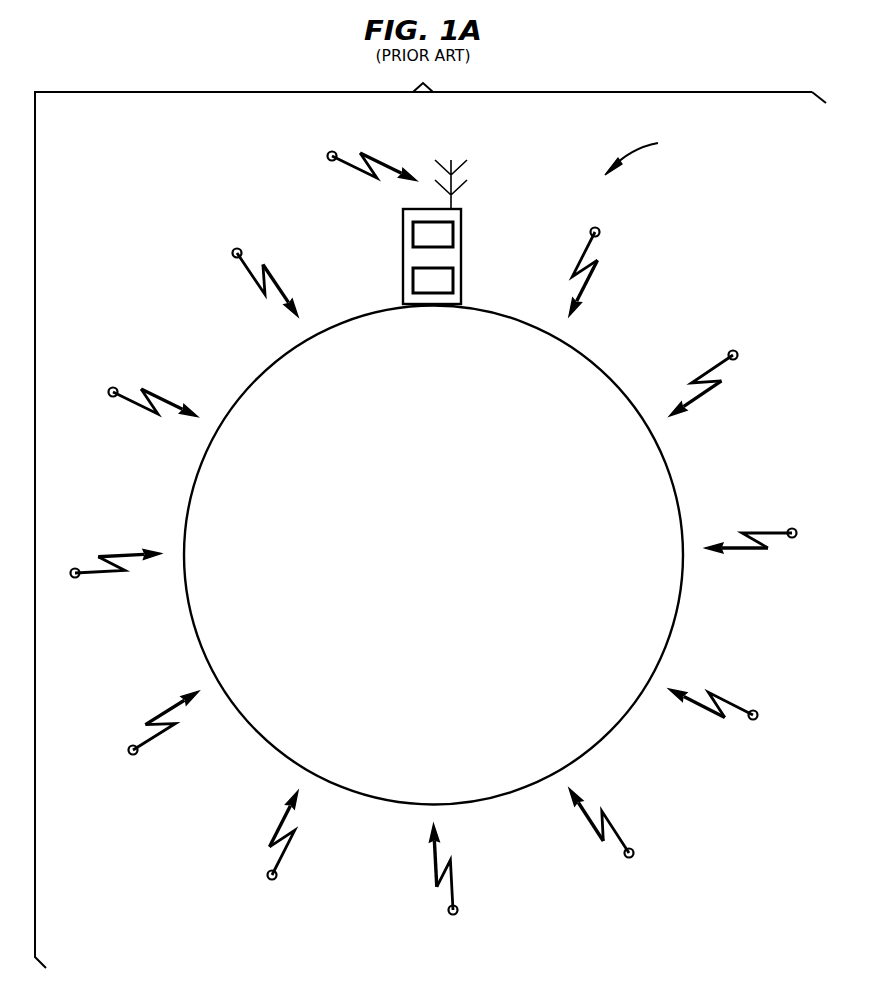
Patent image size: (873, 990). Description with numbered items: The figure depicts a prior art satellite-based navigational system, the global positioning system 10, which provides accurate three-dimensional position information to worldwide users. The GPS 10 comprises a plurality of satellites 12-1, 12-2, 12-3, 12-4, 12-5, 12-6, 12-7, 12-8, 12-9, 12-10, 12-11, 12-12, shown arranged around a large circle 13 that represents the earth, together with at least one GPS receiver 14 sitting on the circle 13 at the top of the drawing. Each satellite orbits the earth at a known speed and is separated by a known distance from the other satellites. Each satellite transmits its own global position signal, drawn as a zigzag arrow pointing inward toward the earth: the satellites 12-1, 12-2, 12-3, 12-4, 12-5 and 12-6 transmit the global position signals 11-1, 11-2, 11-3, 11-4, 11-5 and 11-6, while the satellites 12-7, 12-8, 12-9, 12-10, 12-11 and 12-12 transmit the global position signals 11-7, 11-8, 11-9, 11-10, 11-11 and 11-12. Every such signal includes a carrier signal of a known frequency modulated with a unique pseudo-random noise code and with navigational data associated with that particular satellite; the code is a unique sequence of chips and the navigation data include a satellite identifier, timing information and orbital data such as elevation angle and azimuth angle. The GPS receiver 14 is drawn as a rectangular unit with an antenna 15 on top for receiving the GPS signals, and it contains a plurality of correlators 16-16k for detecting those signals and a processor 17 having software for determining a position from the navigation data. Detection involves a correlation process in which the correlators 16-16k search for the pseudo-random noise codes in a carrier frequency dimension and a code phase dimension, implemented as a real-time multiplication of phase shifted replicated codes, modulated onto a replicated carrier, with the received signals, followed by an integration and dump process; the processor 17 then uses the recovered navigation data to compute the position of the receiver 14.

The global positioning system 10 is at (643, 155).
The global position signal 11-1 is at (373, 185).
The global position signal 11-2 is at (559, 274).
The global position signal 11-3 is at (701, 372).
The global position signal 11-4 is at (748, 520).
The global position signal 11-5 is at (714, 688).
The global position signal 11-6 is at (621, 820).
The global position signal 11-7 is at (471, 867).
The global position signal 11-8 is at (308, 833).
The global position signal 11-9 is at (166, 735).
The global position signal 11-10 is at (118, 585).
The global position signal 11-11 is at (152, 419).
The global position signal 11-12 is at (240, 285).
The satellite 12-1 is at (347, 136).
The satellite 12-2 is at (623, 245).
The satellite 12-3 is at (746, 380).
The satellite 12-4 is at (783, 557).
The satellite 12-5 is at (737, 737).
The satellite 12-6 is at (606, 869).
The satellite 12-7 is at (423, 910).
The satellite 12-8 is at (244, 863).
The satellite 12-9 is at (120, 728).
The satellite 12-10 is at (78, 550).
The satellite 12-11 is at (131, 372).
The satellite 12-12 is at (272, 245).
The coverage area 13 is at (454, 555).
The GPS receiver 14 is at (410, 256).
The antenna 15 is at (469, 177).
The correlators 16-16k is at (473, 227).
The processor 17 is at (454, 278).